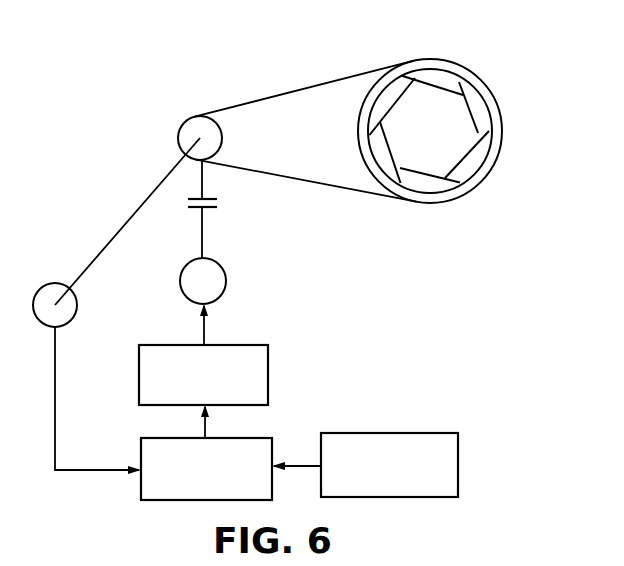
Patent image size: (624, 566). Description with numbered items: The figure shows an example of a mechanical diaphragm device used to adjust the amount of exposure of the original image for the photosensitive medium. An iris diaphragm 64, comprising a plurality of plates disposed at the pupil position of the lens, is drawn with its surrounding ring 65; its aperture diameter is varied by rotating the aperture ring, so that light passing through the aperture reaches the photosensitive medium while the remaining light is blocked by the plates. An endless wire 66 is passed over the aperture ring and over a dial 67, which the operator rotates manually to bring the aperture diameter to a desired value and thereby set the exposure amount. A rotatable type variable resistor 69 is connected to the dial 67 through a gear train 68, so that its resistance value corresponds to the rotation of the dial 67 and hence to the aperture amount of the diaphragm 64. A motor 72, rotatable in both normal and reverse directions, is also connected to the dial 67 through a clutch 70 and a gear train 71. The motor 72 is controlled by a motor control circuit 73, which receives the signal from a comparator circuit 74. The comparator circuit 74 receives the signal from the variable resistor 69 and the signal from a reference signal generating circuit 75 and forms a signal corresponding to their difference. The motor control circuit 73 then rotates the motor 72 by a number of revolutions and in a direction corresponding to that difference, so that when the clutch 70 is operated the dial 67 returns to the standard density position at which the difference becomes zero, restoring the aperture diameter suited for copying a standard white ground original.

The iris diaphragm 64 is at (478, 110).
The rotary drum 65 is at (487, 168).
The endless wire 66 is at (285, 93).
The dial 67 is at (185, 120).
The gear train 68 is at (132, 213).
The variable resistor 69 is at (47, 283).
The clutch 70 is at (188, 210).
The gear train 71 is at (202, 183).
The motor 72 is at (227, 278).
The motor control circuit 73 is at (270, 355).
The comparator circuit 74 is at (153, 438).
The reference signal generating circuit 75 is at (325, 433).